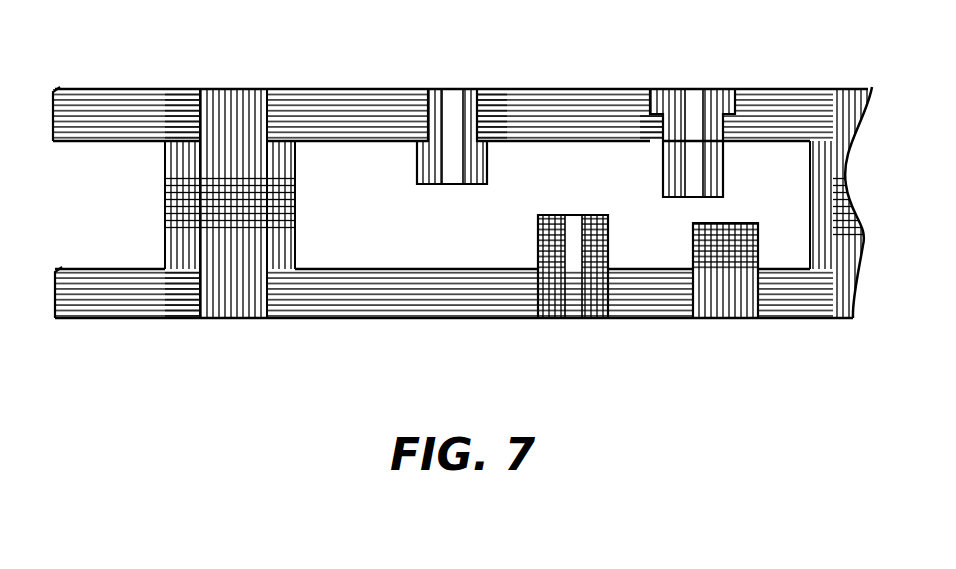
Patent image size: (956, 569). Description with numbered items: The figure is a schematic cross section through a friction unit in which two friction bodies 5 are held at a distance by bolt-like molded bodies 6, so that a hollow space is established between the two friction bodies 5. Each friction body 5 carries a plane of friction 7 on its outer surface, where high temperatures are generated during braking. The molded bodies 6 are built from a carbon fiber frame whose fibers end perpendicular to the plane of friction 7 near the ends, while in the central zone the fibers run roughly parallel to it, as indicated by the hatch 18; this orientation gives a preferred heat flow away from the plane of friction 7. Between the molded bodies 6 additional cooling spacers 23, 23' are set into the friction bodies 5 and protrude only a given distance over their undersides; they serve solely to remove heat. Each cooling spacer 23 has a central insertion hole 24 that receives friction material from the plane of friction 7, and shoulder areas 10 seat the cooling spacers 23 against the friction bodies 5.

The friction body 5 is at (317, 118).
The molded body 6 is at (190, 157).
The plane of friction 7 is at (378, 88).
The shoulder area 10 is at (478, 138).
The hatch 18 is at (253, 222).
The cooling spacer 23 is at (585, 203).
The cooling spacer 23' is at (743, 298).
The central insertion hole 24 is at (449, 110).